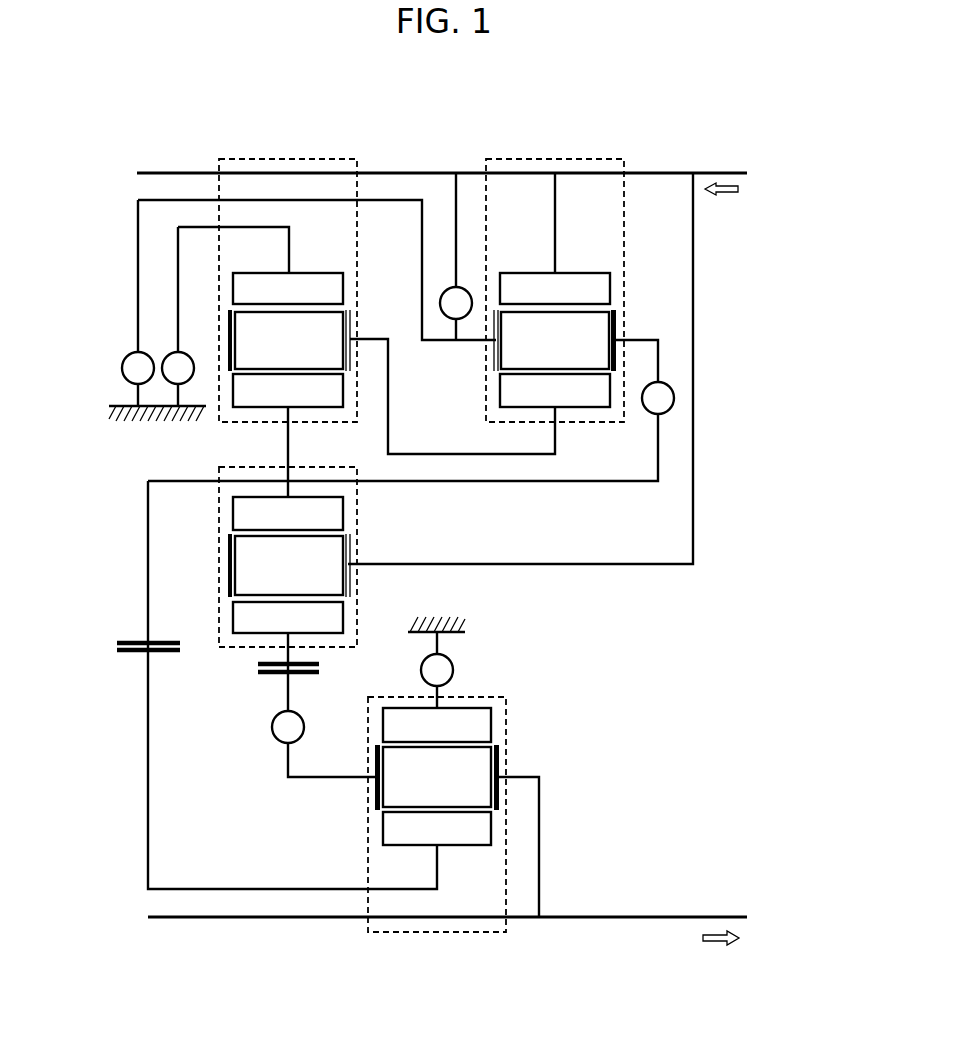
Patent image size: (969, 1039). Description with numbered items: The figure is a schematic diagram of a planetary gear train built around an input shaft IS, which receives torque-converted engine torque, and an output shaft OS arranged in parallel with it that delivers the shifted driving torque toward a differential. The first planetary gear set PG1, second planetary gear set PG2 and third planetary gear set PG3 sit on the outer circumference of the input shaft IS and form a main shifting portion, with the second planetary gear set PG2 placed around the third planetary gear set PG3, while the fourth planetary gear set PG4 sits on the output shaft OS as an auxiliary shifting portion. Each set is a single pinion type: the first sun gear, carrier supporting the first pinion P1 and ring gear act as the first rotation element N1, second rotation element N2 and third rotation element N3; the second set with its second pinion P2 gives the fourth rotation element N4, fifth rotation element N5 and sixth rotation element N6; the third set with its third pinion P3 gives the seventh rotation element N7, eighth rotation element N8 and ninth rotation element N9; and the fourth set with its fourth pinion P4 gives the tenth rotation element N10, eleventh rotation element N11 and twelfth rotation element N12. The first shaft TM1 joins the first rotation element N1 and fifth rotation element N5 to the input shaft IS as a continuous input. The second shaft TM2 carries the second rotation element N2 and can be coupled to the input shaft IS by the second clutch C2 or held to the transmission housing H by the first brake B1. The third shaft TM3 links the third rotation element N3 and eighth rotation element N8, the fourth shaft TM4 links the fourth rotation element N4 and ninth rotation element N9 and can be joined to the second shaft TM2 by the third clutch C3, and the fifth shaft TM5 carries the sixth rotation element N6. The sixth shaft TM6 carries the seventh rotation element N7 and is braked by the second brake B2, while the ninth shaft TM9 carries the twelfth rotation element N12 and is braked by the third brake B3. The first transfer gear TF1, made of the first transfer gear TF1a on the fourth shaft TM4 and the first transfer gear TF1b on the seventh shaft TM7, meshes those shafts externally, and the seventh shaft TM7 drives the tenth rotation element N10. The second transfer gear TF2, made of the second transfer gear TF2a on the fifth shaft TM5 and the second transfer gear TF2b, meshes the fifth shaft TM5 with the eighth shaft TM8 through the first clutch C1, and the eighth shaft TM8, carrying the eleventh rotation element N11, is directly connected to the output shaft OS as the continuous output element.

The input shaft IS is at (457, 170).
The output shaft OS is at (716, 915).
The first planetary gear set PG1 is at (565, 154).
The second planetary gear set PG2 is at (365, 527).
The third planetary gear set PG3 is at (297, 154).
The fourth planetary gear set PG4 is at (430, 938).
The first rotation element N1 is at (555, 288).
The second rotation element N2 is at (617, 325).
The third rotation element N3 is at (555, 390).
The fourth rotation element N4 is at (288, 513).
The fifth rotation element N5 is at (232, 547).
The sixth rotation element N6 is at (288, 617).
The seventh rotation element N7 is at (288, 288).
The eighth rotation element N8 is at (352, 322).
The ninth rotation element N9 is at (288, 390).
The tenth rotation element N10 is at (437, 828).
The eleventh rotation element N11 is at (500, 755).
The twelfth rotation element N12 is at (437, 725).
The first pinion P1 is at (555, 340).
The second pinion P2 is at (289, 565).
The third pinion P3 is at (289, 340).
The fourth pinion P4 is at (437, 777).
The first shaft TM1 is at (560, 232).
The second shaft TM2 is at (386, 196).
The third shaft TM3 is at (417, 448).
The fourth shaft TM4 is at (548, 489).
The fifth shaft TM5 is at (282, 641).
The sixth shaft TM6 is at (197, 223).
The seventh shaft TM7 is at (152, 840).
The eighth shaft TM8 is at (543, 842).
The ninth shaft TM9 is at (441, 698).
The first brake B1 is at (138, 303).
The second brake B2 is at (178, 316).
The third brake B3 is at (437, 659).
The first clutch C1 is at (288, 727).
The second clutch C2 is at (456, 303).
The third clutch C3 is at (658, 398).
The first transfer gear TF1 is at (115, 693).
The first transfer gear TF1a is at (117, 643).
The first transfer gear TF1b is at (122, 652).
The second transfer gear TF2 is at (249, 725).
The second transfer gear TF2a is at (258, 664).
The second transfer gear TF2b is at (259, 674).
The transmission housing H is at (155, 423).